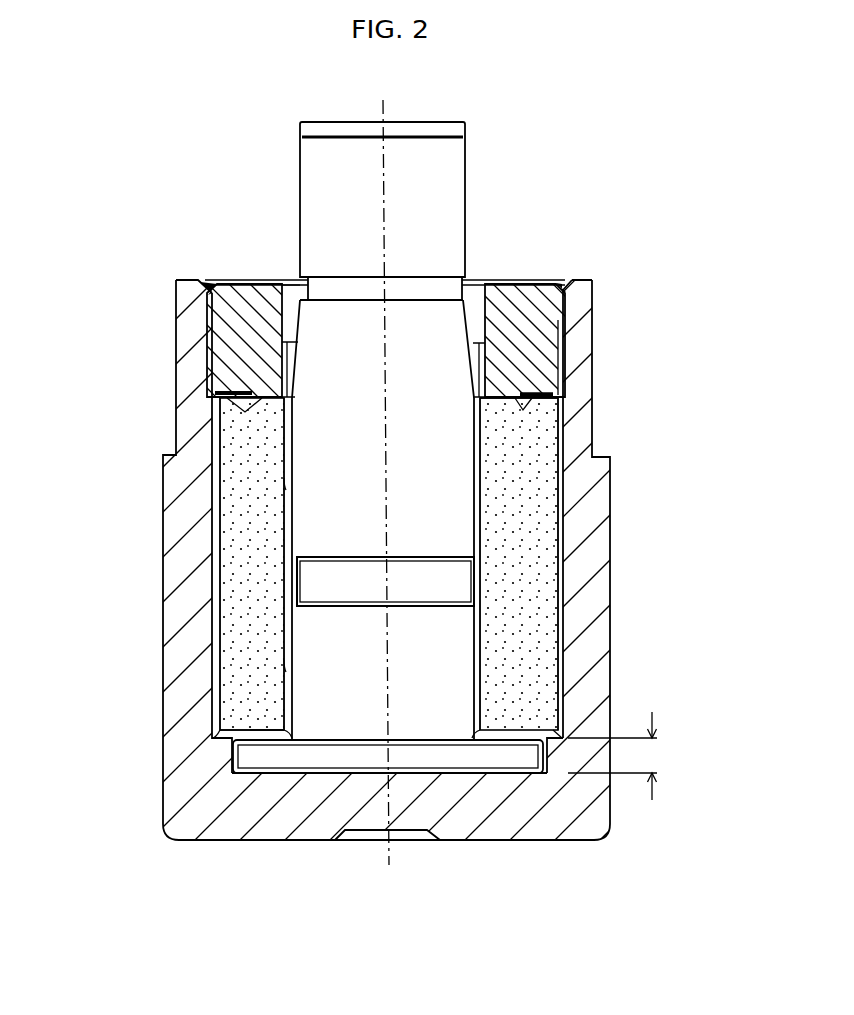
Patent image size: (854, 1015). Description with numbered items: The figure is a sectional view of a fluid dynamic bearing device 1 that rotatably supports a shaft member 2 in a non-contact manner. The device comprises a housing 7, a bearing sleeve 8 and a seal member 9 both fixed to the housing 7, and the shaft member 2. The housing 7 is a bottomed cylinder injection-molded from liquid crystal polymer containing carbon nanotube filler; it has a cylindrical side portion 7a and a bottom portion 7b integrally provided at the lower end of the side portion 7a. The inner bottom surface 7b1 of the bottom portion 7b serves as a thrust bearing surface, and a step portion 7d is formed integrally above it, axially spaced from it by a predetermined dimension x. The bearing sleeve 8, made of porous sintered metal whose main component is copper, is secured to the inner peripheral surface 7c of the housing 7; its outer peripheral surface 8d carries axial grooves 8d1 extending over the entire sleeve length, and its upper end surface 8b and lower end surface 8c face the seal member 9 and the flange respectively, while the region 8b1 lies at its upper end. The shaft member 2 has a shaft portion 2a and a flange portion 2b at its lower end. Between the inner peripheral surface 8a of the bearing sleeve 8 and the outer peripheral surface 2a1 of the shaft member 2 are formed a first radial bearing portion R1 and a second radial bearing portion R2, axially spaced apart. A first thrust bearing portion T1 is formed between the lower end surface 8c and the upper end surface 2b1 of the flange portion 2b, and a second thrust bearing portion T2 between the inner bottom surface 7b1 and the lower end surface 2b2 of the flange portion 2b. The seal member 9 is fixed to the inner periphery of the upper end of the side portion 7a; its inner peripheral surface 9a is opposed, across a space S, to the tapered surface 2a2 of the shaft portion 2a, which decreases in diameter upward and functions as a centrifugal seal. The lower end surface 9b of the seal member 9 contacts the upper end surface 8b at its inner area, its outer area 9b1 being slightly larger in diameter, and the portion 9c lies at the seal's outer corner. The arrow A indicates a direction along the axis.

The fluid dynamic bearing device 1 is at (577, 215).
The shaft member 2 is at (470, 182).
The shaft portion 2a is at (422, 142).
The outer peripheral surface of the shaft member 2a1 is at (480, 440).
The tapered surface 2a2 is at (480, 290).
The flange portion 2b is at (548, 753).
The upper end surface of the flange portion 2b1 is at (510, 733).
The lower end surface of the flange portion 2b2 is at (512, 757).
The housing 7 is at (175, 347).
The side portion 7a is at (185, 482).
The bottom portion 7b is at (452, 822).
The inner bottom surface 7b1 is at (300, 750).
The inner peripheral surface of the housing 7c is at (560, 536).
The step portion 7d is at (217, 730).
The bearing sleeve 8 is at (540, 462).
The inner peripheral surface of the bearing sleeve 8a is at (478, 484).
The upper end surface of the bearing sleeve 8b is at (498, 392).
The bearing upper end chamfer 8b1 is at (530, 392).
The lower end surface of the bearing sleeve 8c is at (233, 757).
The outer peripheral surface of the bearing sleeve 8d is at (565, 583).
The axial grooves 8d1 is at (215, 592).
The seal member 9 is at (222, 288).
The inner peripheral surface of the seal member 9a is at (284, 361).
The lower end surface of the seal member 9b is at (268, 403).
The outer area of the lower end surface of the seal member 9b1 is at (236, 397).
The seal outer edge 9c is at (205, 289).
The space S is at (283, 290).
The first radial bearing portion R1 is at (272, 484).
The second radial bearing portion R2 is at (268, 662).
The first thrust bearing portion T1 is at (255, 730).
The second thrust bearing portion T2 is at (278, 778).
The axial direction A is at (184, 170).
The predetermined dimension x is at (621, 756).